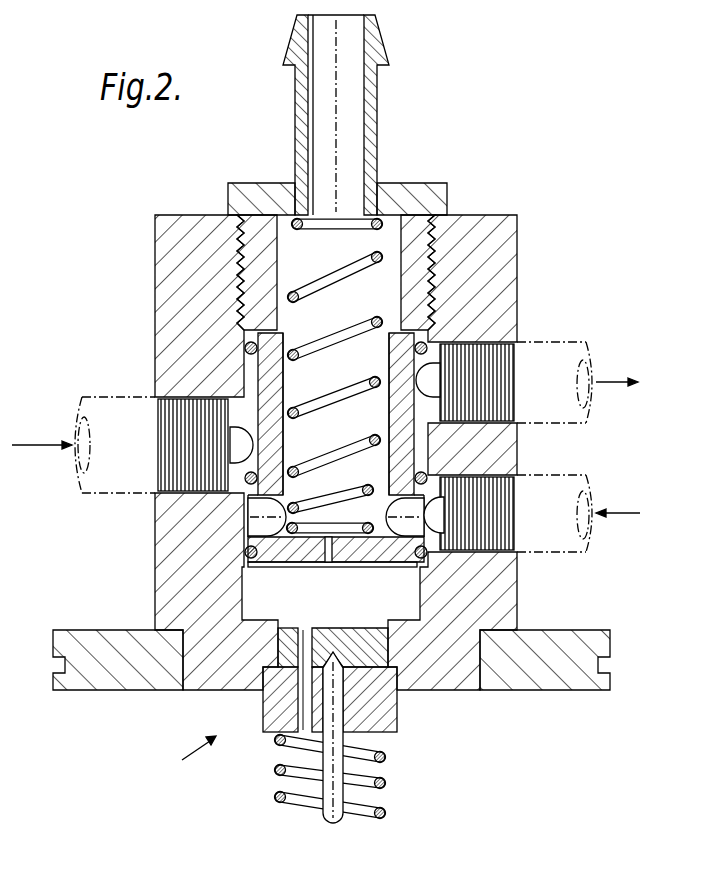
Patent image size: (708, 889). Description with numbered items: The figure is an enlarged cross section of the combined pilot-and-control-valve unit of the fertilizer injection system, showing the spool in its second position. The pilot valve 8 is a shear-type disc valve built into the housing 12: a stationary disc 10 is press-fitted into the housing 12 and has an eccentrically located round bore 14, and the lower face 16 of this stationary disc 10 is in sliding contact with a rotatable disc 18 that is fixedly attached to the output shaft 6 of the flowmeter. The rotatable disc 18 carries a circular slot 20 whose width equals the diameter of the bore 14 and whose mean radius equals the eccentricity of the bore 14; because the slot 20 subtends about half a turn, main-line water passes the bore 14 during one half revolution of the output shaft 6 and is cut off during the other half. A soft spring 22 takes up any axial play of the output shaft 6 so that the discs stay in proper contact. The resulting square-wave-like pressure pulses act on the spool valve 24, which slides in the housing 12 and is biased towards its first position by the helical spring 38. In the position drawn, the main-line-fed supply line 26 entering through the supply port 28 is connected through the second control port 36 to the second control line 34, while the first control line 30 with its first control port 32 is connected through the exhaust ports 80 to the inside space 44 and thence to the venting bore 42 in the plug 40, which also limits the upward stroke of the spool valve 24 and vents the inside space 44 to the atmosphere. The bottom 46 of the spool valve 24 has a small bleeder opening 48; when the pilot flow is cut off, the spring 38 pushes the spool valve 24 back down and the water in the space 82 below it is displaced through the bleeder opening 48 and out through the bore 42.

The output shaft 6 is at (325, 810).
The pilot valve 8 is at (184, 757).
The stationary disc 10 is at (380, 682).
The housing 12 is at (163, 547).
The eccentric bore 14 is at (297, 642).
The lower face 16 is at (300, 731).
The rotatable disc 18 is at (387, 720).
The circular slot 20 is at (290, 748).
The soft spring 22 is at (388, 782).
The spool valve 24 is at (270, 380).
The supply line 26 is at (97, 400).
The supply port 28 is at (237, 450).
The first control line 30 is at (560, 497).
The first control port 32 is at (428, 520).
The second control line 34 is at (570, 345).
The second control port 36 is at (430, 387).
The helical spring 38 is at (292, 292).
The plug 40 is at (443, 183).
The venting bore 42 is at (348, 143).
The inside space 44 is at (365, 415).
The bottom 46 is at (363, 552).
The bleeder opening 48 is at (315, 550).
The exhaust ports 80 is at (398, 527).
The space 82 is at (243, 580).